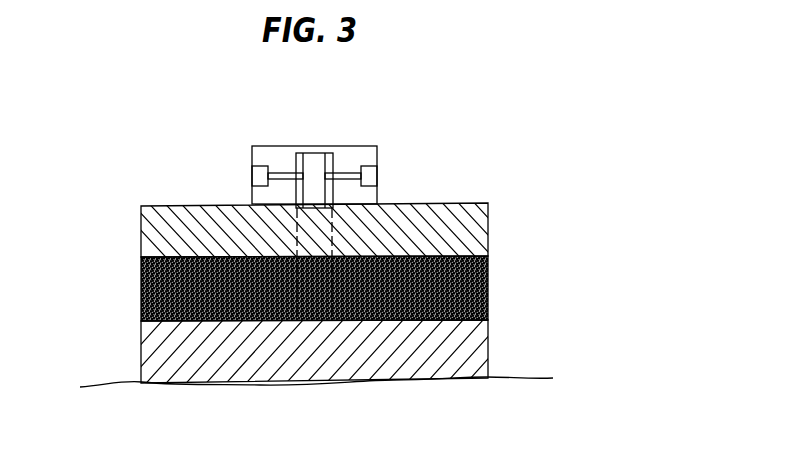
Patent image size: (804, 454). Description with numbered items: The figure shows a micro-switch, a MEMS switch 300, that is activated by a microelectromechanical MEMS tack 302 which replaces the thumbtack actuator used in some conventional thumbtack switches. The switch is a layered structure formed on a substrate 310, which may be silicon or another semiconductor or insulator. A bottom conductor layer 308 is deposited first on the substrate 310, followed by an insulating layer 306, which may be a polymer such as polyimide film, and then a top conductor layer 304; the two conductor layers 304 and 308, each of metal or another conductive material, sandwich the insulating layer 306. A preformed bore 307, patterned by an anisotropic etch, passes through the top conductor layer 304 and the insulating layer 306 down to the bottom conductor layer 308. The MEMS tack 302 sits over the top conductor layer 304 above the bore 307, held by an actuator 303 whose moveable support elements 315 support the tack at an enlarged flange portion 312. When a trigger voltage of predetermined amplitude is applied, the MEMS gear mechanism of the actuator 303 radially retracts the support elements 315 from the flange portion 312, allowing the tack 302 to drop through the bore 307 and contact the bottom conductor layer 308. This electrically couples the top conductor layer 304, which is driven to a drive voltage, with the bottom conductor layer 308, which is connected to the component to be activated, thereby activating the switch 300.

The MEMS switch 300 is at (138, 155).
The MEMS tack 302 is at (313, 163).
The enlarged flange portion 312 is at (338, 158).
The moveable support elements 315 is at (352, 170).
The actuator 303 is at (372, 175).
The preformed bore 307 is at (297, 292).
The top conductor layer 304 is at (142, 232).
The insulating layer 306 is at (142, 288).
The bottom conductor layer 308 is at (142, 340).
The substrate 310 is at (338, 421).